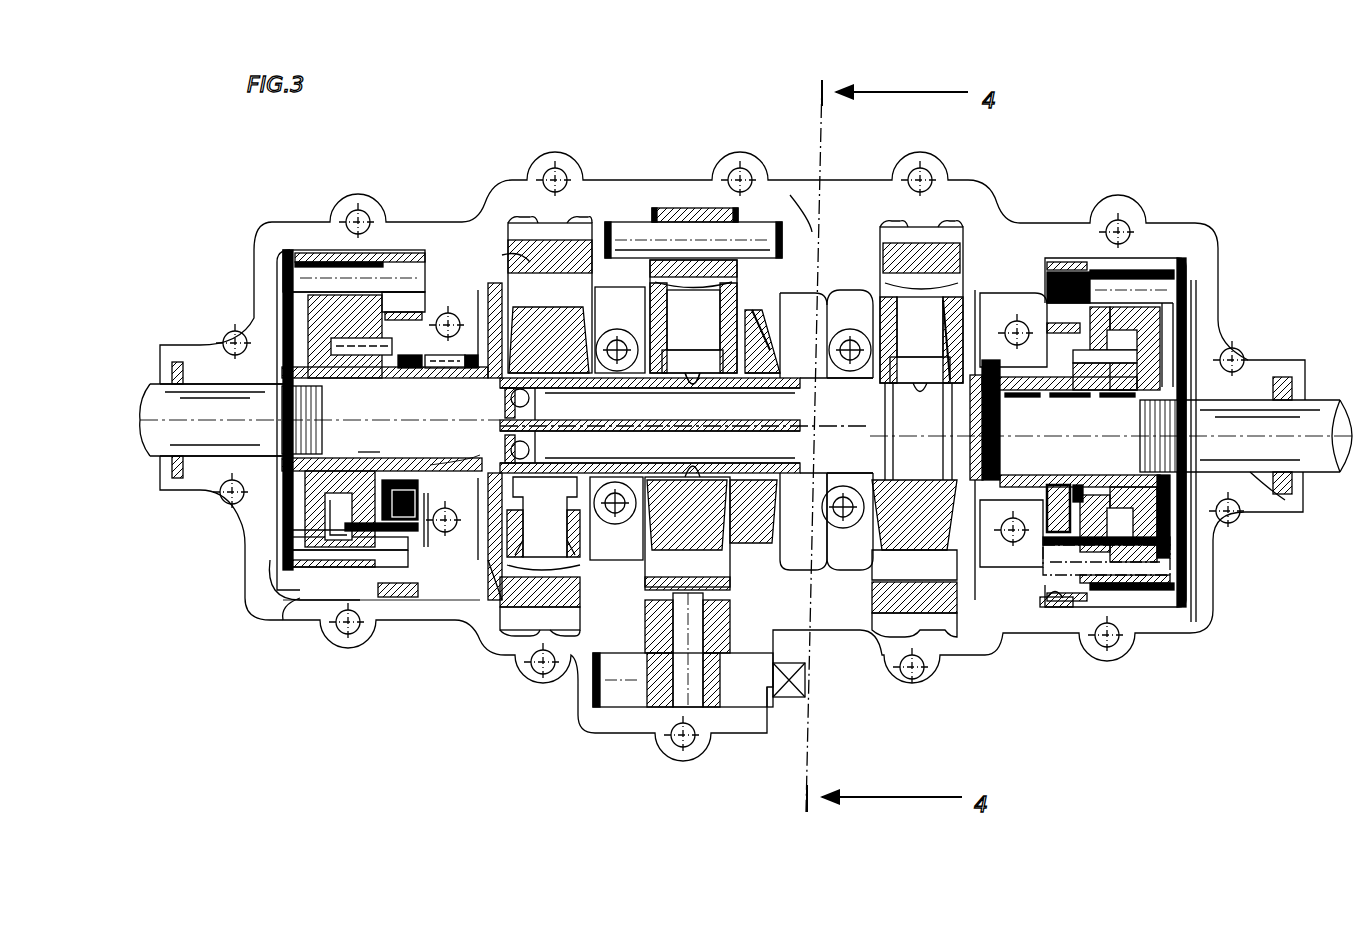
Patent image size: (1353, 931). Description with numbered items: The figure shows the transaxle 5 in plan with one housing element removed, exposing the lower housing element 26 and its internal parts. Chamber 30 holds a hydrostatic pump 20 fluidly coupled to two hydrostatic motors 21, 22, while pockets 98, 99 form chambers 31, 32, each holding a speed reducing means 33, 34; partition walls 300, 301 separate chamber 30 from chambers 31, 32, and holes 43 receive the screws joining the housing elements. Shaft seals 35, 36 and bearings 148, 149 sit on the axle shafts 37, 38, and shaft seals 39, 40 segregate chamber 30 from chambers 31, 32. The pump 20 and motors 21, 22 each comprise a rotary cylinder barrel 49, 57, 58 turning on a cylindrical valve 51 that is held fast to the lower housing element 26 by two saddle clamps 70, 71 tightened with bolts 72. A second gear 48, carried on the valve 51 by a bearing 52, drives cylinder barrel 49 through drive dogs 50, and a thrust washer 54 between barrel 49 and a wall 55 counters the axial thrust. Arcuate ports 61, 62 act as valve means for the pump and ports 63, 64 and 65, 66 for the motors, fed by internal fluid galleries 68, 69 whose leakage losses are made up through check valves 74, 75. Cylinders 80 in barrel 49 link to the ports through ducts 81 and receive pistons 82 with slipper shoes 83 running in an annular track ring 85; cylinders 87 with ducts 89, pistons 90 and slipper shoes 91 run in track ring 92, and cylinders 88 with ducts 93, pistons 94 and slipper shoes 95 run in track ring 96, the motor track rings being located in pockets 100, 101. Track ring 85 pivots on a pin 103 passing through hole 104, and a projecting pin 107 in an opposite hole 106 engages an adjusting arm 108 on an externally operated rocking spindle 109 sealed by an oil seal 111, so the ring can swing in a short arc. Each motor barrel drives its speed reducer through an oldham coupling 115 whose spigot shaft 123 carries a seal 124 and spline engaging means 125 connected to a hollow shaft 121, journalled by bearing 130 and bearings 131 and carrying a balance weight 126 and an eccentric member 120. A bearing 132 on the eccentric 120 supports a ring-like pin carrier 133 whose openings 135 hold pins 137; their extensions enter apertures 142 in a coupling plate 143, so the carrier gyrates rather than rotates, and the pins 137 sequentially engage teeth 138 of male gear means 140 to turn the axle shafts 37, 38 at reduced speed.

The transaxle 5 is at (543, 98).
The hydrostatic pump 20 is at (737, 570).
The hydrostatic motor 21 is at (480, 592).
The hydrostatic motor 22 is at (965, 617).
The housing element 26 is at (812, 215).
The chamber 30 is at (800, 551).
The chamber 31 is at (350, 571).
The chamber 32 is at (1078, 594).
The speed reducing means 33 is at (240, 617).
The speed reducing means 34 is at (1232, 564).
The shaft seal 35 is at (180, 375).
The shaft seal 36 is at (1290, 490).
The axle shaft 37 is at (188, 447).
The axle shaft 38 is at (1295, 461).
The shaft seal 39 is at (475, 340).
The shaft seal 40 is at (1011, 539).
The holes 43 is at (915, 180).
The second gear 48 is at (776, 341).
The cylinder barrel 49 is at (704, 525).
The drive dogs 50 is at (757, 327).
The cylindrical valve 51 is at (836, 425).
The bearing 52 is at (775, 362).
The thrust washer 54 is at (620, 330).
The wall 55 is at (616, 518).
The cylinder barrel 57 is at (500, 248).
The cylinder barrel 58 is at (896, 545).
The arcuate port 61 is at (670, 406).
The arcuate port 62 is at (670, 448).
The arcuate port 63 is at (545, 425).
The arcuate port 64 is at (582, 425).
The arcuate port 65 is at (910, 431).
The arcuate port 66 is at (940, 427).
The fluid gallery 68 is at (778, 417).
The fluid gallery 69 is at (786, 459).
The saddle clamp 70 is at (857, 463).
The saddle clamp 71 is at (550, 295).
The bolts 72 is at (843, 523).
The check valve 74 is at (549, 340).
The check valve 75 is at (455, 523).
The cylinder 80 is at (660, 292).
The duct 81 is at (706, 396).
The piston 82 is at (705, 334).
The slipper shoe 83 is at (740, 283).
The annular track ring 85 is at (660, 232).
The cylinder 87 is at (500, 566).
The cylinder 88 is at (950, 292).
The duct 89 is at (645, 456).
The piston 90 is at (557, 556).
The slipper shoe 91 is at (580, 568).
The annular track ring 92 is at (500, 632).
The duct 93 is at (850, 337).
The piston 94 is at (924, 337).
The slipper shoe 95 is at (960, 280).
The annular track ring 96 is at (890, 262).
The pocket 98 is at (325, 620).
The pocket 99 is at (1185, 625).
The pocket 100 is at (490, 185).
The pocket 101 is at (965, 215).
The pin 103 is at (748, 253).
The hole 104 is at (695, 222).
The hole 106 is at (687, 571).
The projecting pin 107 is at (648, 610).
The adjusting arm 108 is at (660, 707).
The rocking spindle 109 is at (760, 701).
The oil seal 111 is at (778, 710).
The oldham coupling 115 is at (1013, 330).
The eccentric member 120 is at (370, 372).
The hollow shaft 121 is at (1072, 480).
The spigot shaft 123 is at (916, 516).
The seal 124 is at (1048, 445).
The spline engaging means 125 is at (1060, 420).
The balance weight 126 is at (405, 358).
The bearing 130 is at (415, 520).
The bearings 131 is at (355, 455).
The bearing 132 is at (300, 522).
The pin carrier 133 is at (375, 300).
The openings 135 is at (316, 258).
The pin 137 is at (300, 285).
The teeth 138 is at (290, 565).
The male gear means 140 is at (285, 410).
The apertures 142 is at (418, 258).
The coupling plate 143 is at (385, 583).
The bearing 148 is at (183, 360).
The bearing 149 is at (1245, 480).
The partition wall 300 is at (455, 455).
The partition wall 301 is at (1035, 295).